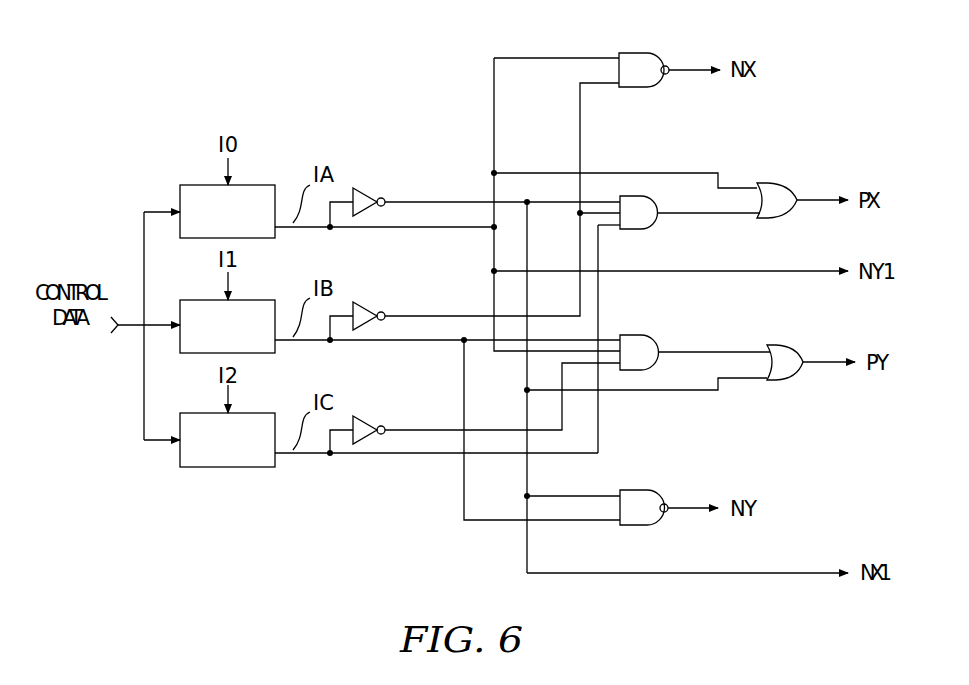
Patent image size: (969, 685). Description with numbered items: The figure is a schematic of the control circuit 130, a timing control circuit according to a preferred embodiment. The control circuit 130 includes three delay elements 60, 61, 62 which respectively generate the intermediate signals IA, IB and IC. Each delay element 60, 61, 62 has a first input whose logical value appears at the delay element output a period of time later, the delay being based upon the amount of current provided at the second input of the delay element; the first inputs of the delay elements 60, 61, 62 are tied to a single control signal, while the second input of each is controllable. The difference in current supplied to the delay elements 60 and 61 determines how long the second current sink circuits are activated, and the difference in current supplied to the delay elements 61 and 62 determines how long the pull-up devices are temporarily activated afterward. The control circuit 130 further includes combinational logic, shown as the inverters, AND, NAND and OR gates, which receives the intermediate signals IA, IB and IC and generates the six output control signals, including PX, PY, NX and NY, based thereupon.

The control circuit 130 is at (237, 31).
The delay element 60 is at (198, 192).
The delay element 61 is at (200, 306).
The delay element 62 is at (200, 420).